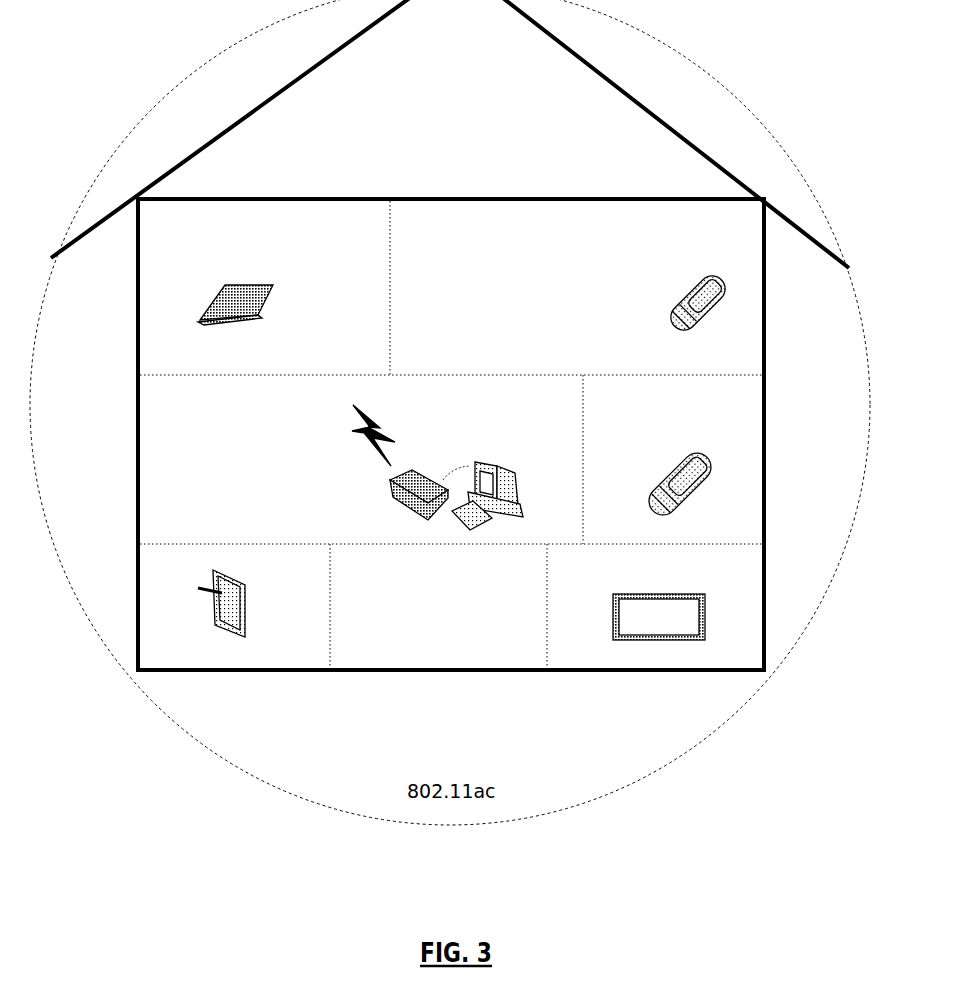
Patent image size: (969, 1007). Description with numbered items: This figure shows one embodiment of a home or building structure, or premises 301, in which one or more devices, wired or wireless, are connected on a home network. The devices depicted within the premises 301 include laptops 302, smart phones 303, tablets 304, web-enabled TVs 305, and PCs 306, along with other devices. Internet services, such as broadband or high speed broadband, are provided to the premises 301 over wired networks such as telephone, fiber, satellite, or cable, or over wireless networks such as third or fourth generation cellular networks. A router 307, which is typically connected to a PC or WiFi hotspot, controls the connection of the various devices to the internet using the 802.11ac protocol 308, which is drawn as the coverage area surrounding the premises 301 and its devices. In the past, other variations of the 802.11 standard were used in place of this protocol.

The home or building structure (premises) 301 is at (477, 55).
The laptops 302 is at (213, 312).
The smart phones 303 is at (717, 460).
The tablets 304 is at (257, 628).
The web-enabled TVs 305 is at (705, 628).
The PCs 306 is at (513, 495).
The router 307 is at (423, 478).
The 802.11ac protocol 308 is at (643, 772).